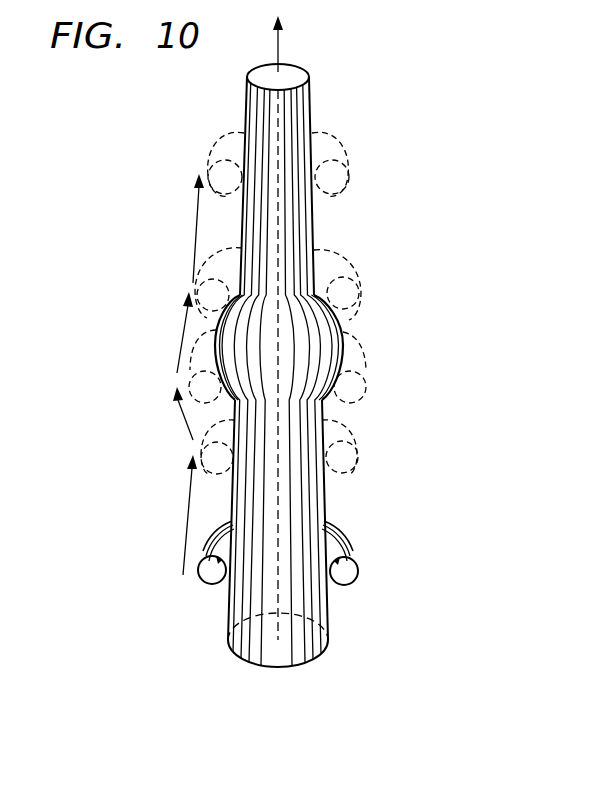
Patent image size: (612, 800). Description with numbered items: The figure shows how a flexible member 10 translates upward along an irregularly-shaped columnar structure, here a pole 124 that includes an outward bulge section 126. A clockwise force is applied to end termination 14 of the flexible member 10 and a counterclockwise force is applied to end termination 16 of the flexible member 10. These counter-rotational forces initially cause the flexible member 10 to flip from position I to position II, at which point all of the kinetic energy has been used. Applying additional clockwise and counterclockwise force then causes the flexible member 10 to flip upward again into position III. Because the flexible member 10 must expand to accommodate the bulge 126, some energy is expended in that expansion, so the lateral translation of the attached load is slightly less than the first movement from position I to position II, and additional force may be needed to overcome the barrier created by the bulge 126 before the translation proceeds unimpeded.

The flexible member 10 is at (340, 535).
The end termination 14 is at (200, 586).
The end termination 16 is at (358, 571).
The pole 124 is at (312, 212).
The outward bulge section 126 is at (330, 327).
The position I is at (340, 442).
The position II is at (278, 284).
The position III is at (358, 375).